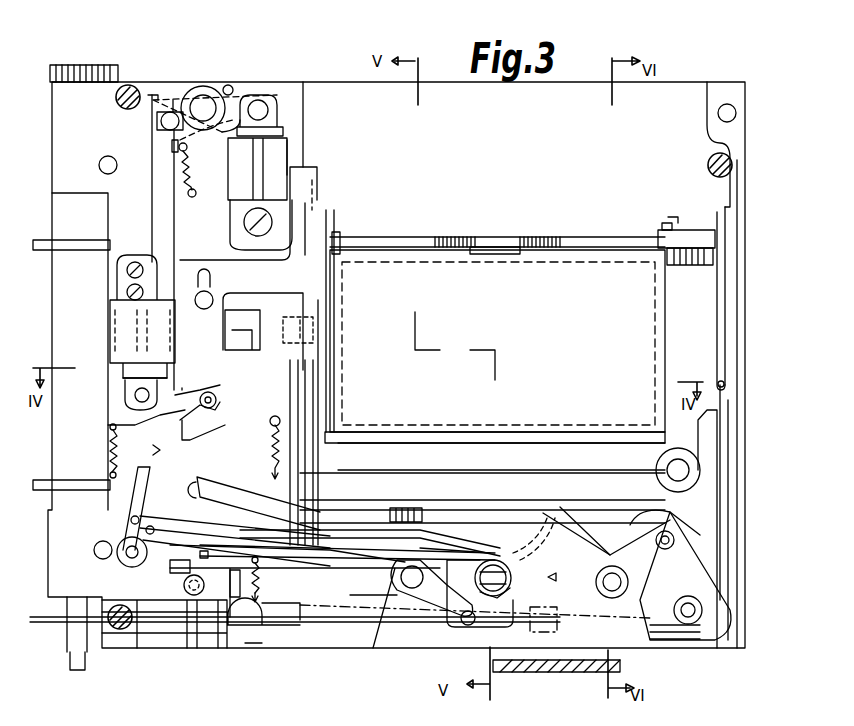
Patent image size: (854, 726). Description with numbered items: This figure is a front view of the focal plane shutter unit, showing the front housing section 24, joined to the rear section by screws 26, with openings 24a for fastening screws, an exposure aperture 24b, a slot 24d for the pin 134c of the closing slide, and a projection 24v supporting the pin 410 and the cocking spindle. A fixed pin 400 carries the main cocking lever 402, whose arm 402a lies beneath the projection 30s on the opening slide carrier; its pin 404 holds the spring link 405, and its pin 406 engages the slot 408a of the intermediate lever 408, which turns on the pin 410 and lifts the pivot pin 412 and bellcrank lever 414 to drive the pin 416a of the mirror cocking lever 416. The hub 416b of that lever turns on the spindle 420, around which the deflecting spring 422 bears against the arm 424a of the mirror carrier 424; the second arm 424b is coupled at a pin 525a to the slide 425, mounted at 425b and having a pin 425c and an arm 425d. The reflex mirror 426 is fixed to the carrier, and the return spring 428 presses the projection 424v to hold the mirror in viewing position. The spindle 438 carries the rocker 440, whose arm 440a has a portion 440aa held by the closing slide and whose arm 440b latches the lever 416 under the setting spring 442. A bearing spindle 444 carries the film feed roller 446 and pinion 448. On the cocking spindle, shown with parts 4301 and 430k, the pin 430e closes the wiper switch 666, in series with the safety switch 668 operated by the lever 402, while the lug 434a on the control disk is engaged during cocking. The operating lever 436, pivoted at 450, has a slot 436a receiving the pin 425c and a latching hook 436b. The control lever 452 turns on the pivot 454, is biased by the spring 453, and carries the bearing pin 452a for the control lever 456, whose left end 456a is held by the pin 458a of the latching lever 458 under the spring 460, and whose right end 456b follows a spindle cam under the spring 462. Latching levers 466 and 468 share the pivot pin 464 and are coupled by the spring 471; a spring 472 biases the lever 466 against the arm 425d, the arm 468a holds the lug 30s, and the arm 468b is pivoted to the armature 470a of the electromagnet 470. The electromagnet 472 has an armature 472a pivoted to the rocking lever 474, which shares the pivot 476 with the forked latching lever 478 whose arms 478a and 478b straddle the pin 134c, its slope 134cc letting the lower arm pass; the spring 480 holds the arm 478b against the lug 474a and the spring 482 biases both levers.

The front section 24 is at (728, 650).
The opening 24a is at (100, 162).
The picture window 24b is at (345, 455).
The slot 24d is at (152, 200).
The projection 24v is at (390, 640).
The screws 26 is at (112, 89).
The projection 30s is at (240, 338).
The pin 134c is at (150, 116).
The slope 134cc is at (174, 100).
The fixed pin 400 is at (678, 458).
The rocking lever 402 is at (645, 530).
The arm 402a is at (270, 630).
The pin 404 is at (672, 625).
The link 405 is at (52, 626).
The pin 406 is at (662, 550).
The intermediate lever 408 is at (604, 618).
The slot 408a is at (665, 532).
The pin 410 is at (603, 588).
The pivot pin 412 is at (688, 625).
The bellcrank lever 414 is at (700, 427).
The cocking lever 416 is at (720, 306).
The driving pin 416a is at (660, 232).
The hub 416b is at (688, 266).
The spindle 420 is at (572, 240).
The deflecting spring 422 is at (678, 218).
The mirror carrier 424 is at (668, 336).
The lever arm 424a is at (668, 222).
The second arm 424b is at (331, 208).
The projection 424v is at (497, 256).
The slide 425 is at (205, 262).
The mounting 425b is at (210, 292).
The pin 425c is at (186, 488).
The arm 425d is at (175, 453).
The reflex mirror 426 is at (455, 422).
The return spring 428 is at (447, 240).
The cam disc 4301 is at (486, 555).
The pin 430e is at (540, 568).
The cam lobe 430k is at (497, 598).
The lug 434a is at (512, 556).
The operating lever 436 is at (314, 520).
The slot 436a is at (192, 484).
The latching hook 436b is at (460, 622).
The spindle 438 is at (577, 490).
The U-shaped rocker 440 is at (583, 515).
The left hand arm 440a is at (320, 415).
The portion 440aa is at (290, 330).
The right hand arm 440b is at (715, 385).
The setting spring 442 is at (395, 510).
The bearing spindle 444 is at (78, 662).
The film feed roller 446 is at (60, 222).
The pinion 448 is at (88, 64).
The pivot 450 is at (400, 578).
The control lever 452 is at (148, 566).
The bearing pin 452a is at (347, 598).
The spring 453 is at (262, 509).
The fixed pivot 454 is at (122, 564).
The control lever 456 is at (360, 540).
The left end 456a is at (118, 543).
The right hand end 456b is at (455, 540).
The latching lever 458 is at (130, 482).
The pin 458a is at (130, 520).
The spring 460 is at (163, 568).
The spring 462 is at (300, 556).
The fixed pivot pin 464 is at (310, 392).
The latching lever 466 is at (110, 426).
The latching lever 468 is at (193, 390).
The arm 468a is at (300, 368).
The arm 468b is at (134, 396).
The electromagnet 470 is at (122, 320).
The armature 470a is at (118, 375).
The connecting spring 471 is at (203, 429).
The electromagnet 472 is at (277, 152).
The armature 472a is at (283, 123).
The rocking lever 474 is at (238, 112).
The lug 474a is at (170, 147).
The fixed pivot 476 is at (205, 94).
The forked latching lever 478 is at (212, 78).
The upper arm 478a is at (153, 98).
The second arm 478b is at (152, 130).
The spring 480 is at (262, 98).
The spring 482 is at (205, 174).
The bracket 525a is at (338, 230).
The wiper contact switch 666 is at (567, 579).
The safety contact switch 668 is at (248, 645).